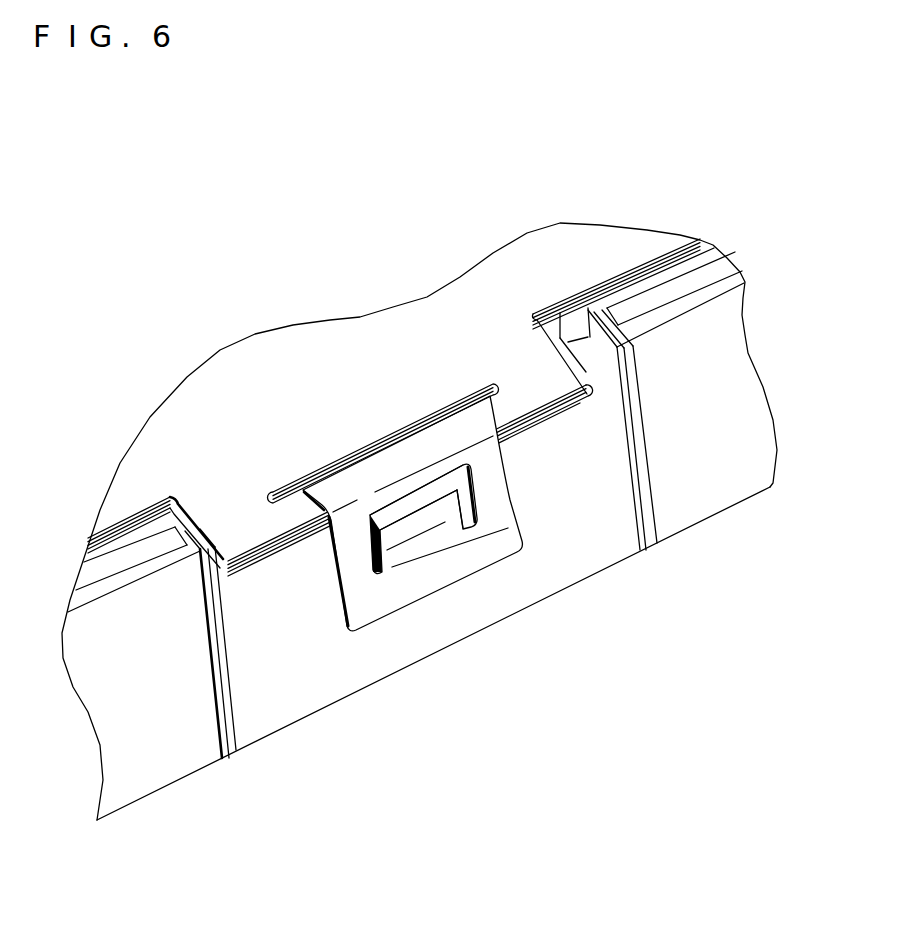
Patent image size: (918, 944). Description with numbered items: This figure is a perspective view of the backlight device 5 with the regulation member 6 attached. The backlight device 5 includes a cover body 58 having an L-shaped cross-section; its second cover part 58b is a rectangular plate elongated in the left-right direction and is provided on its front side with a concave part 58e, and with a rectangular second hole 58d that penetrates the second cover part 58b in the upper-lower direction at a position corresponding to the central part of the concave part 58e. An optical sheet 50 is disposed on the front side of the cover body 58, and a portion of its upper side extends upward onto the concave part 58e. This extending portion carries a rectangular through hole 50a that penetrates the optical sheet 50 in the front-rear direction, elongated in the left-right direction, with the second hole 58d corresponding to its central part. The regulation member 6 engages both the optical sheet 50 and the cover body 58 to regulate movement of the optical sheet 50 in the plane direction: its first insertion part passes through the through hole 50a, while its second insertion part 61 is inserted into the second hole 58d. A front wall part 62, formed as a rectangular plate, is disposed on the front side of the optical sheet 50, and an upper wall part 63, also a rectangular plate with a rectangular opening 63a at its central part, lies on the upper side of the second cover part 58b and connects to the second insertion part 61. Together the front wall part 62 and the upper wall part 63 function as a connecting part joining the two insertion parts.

The backlight device 5 is at (815, 170).
The optical sheet 50 is at (583, 256).
The through hole 50a is at (490, 393).
The cover body 58 is at (721, 550).
The second cover part 58b is at (357, 675).
The second hole 58d is at (453, 512).
The concave part 58e is at (613, 385).
The regulation member 6 is at (328, 598).
The second insertion part 61 is at (413, 528).
The front wall part 62 is at (427, 447).
The upper wall part 63 is at (503, 505).
The rectangular opening 63a is at (383, 505).